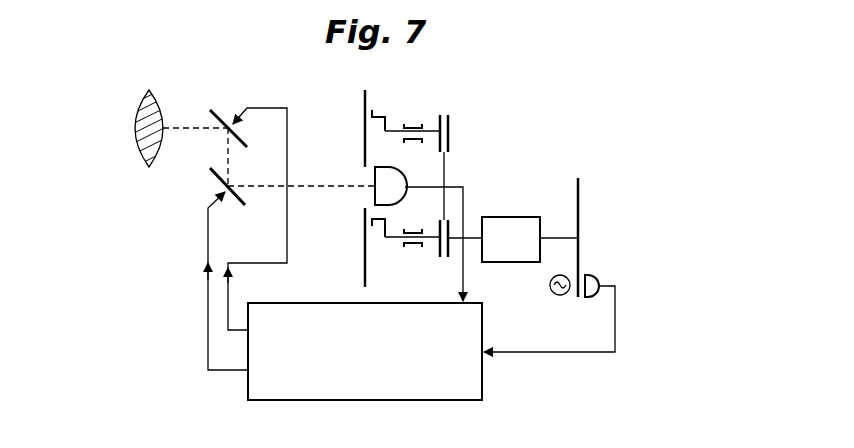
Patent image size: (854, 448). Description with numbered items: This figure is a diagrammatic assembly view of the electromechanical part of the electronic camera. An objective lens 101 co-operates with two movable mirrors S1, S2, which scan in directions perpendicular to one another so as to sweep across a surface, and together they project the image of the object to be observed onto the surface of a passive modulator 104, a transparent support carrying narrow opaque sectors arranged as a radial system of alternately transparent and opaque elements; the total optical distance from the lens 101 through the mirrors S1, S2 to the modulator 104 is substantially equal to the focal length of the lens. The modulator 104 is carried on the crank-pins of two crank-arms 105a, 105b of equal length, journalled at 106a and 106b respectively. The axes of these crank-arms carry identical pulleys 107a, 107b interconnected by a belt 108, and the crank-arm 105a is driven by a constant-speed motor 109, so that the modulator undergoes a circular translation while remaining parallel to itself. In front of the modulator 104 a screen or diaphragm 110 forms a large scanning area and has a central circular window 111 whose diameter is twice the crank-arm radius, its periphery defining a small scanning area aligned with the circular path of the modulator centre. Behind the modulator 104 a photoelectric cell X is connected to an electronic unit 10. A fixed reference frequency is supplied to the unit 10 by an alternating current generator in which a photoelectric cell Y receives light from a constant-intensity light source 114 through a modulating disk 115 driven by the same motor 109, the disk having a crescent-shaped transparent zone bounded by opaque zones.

The electronic unit 10 is at (377, 390).
The objective lens 101 is at (137, 138).
The movable mirror S1 is at (229, 110).
The movable mirror S2 is at (222, 175).
The passive modulator 104 is at (365, 131).
The crank-arm 105a is at (383, 227).
The crank-arm 105b is at (387, 115).
The journal 106a is at (410, 247).
The journal 106b is at (412, 123).
The pulley 107a is at (452, 221).
The pulley 107b is at (452, 143).
The belt 108 is at (446, 178).
The constant-speed motor 109 is at (508, 255).
The screen or diaphragm 110 is at (363, 272).
The central circular window 111 is at (362, 192).
The light source 114 is at (555, 297).
The modulating disk 115 is at (580, 206).
The photoelectric cell X is at (375, 175).
The photoelectric cell Y is at (600, 278).